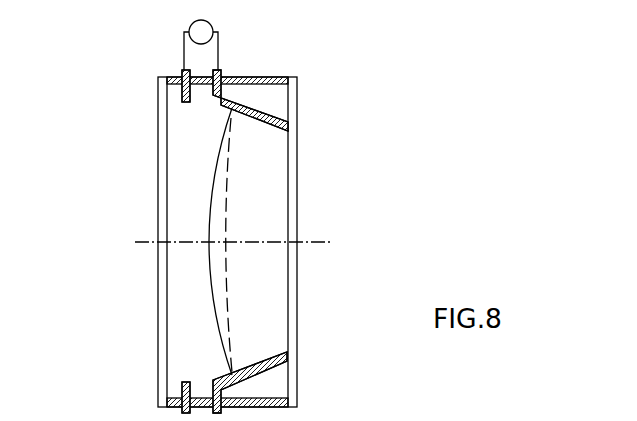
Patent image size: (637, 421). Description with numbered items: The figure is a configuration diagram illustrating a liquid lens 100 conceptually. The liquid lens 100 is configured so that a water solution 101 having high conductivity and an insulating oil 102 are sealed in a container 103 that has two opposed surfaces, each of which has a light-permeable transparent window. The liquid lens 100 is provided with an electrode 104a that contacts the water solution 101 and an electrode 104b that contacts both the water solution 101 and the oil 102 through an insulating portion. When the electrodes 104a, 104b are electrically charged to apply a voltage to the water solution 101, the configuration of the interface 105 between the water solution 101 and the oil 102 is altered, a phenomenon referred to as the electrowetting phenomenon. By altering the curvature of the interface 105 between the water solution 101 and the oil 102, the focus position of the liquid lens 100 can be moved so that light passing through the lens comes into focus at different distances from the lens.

The liquid lens 100 is at (141, 104).
The water solution 101 is at (185, 187).
The insulating oil 102 is at (270, 193).
The container 103 is at (158, 350).
The electrode 104a is at (182, 71).
The electrode 104b is at (221, 69).
The interface 105 is at (210, 300).